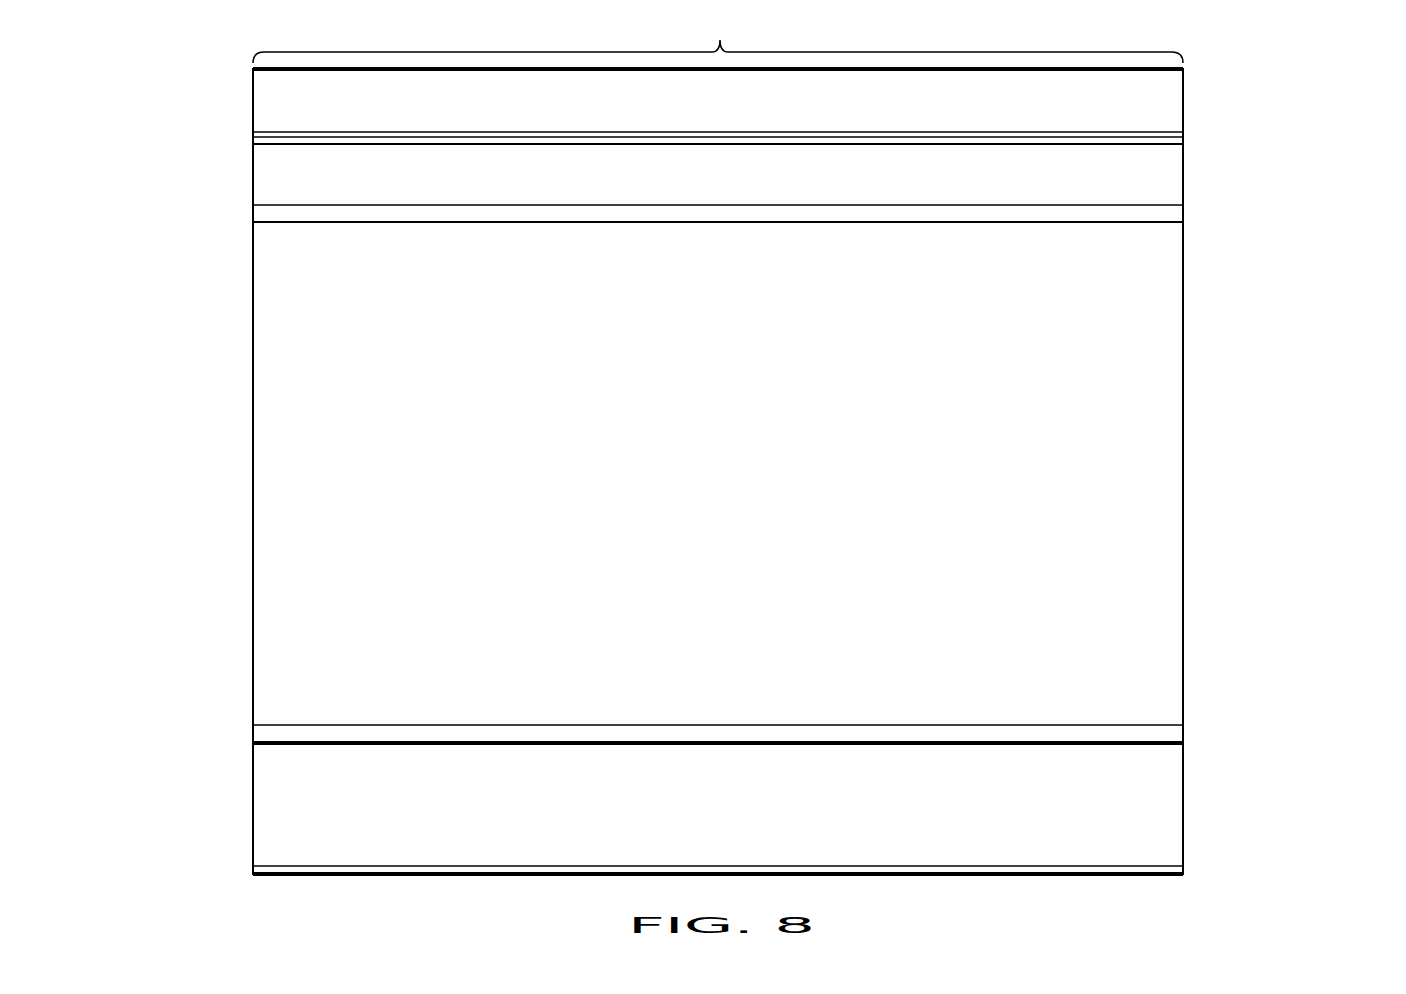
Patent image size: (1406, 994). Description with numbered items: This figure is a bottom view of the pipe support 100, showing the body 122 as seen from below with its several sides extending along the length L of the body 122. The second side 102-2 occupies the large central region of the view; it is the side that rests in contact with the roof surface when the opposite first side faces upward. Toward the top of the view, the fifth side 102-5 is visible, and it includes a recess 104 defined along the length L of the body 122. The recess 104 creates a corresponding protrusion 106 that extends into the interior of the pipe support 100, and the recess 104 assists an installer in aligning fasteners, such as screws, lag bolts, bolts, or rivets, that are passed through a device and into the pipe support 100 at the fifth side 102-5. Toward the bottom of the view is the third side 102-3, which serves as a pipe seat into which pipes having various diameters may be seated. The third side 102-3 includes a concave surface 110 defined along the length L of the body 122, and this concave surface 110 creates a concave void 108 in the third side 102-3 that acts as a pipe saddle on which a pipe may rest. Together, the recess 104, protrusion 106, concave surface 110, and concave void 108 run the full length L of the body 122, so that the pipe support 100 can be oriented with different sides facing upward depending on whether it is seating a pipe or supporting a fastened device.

The pipe support 100 is at (97, 57).
The length L is at (718, 39).
The recess 104 is at (1184, 141).
The protrusion 106 is at (1135, 141).
The fifth side 102-5 is at (345, 172).
The second side 102-2 is at (365, 467).
The body 122 is at (1225, 527).
The concave void 108 is at (1150, 813).
The concave surface 110 is at (1120, 832).
The third side 102-3 is at (1183, 857).